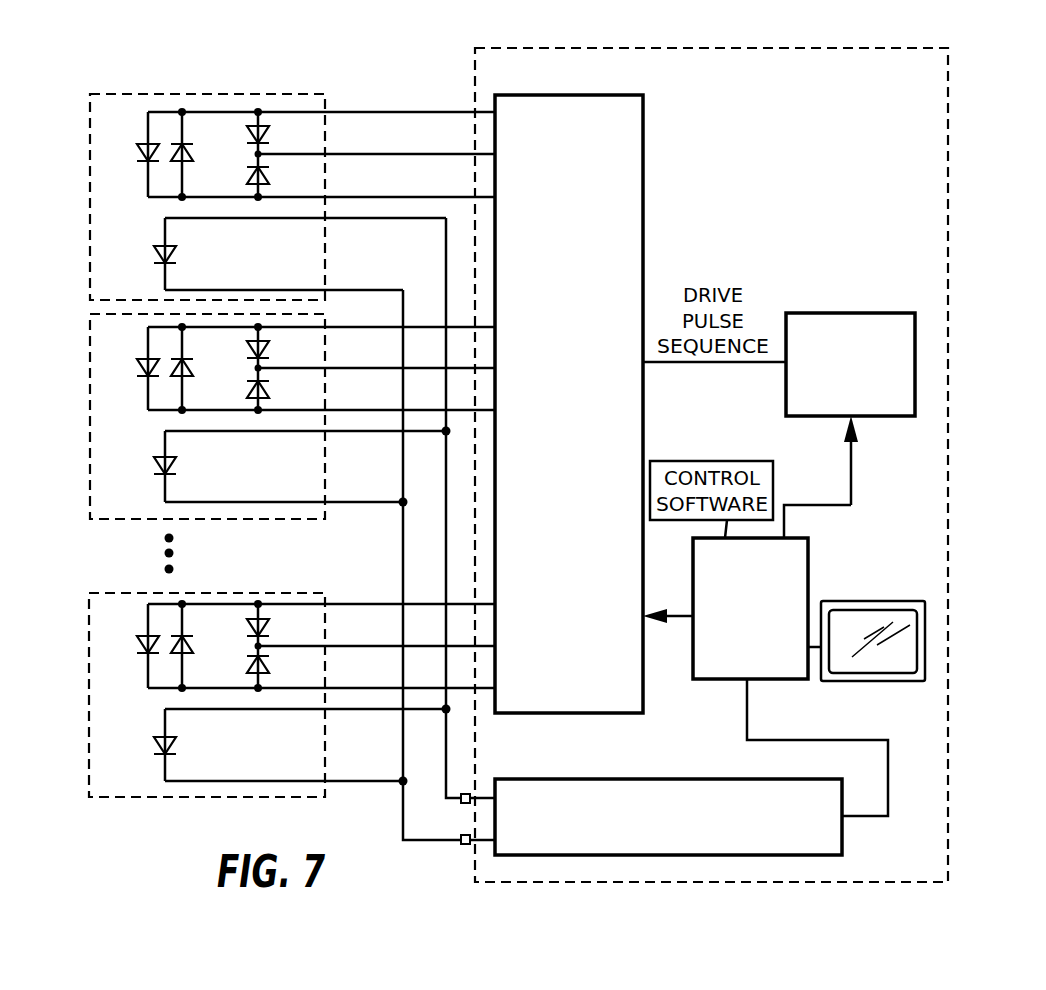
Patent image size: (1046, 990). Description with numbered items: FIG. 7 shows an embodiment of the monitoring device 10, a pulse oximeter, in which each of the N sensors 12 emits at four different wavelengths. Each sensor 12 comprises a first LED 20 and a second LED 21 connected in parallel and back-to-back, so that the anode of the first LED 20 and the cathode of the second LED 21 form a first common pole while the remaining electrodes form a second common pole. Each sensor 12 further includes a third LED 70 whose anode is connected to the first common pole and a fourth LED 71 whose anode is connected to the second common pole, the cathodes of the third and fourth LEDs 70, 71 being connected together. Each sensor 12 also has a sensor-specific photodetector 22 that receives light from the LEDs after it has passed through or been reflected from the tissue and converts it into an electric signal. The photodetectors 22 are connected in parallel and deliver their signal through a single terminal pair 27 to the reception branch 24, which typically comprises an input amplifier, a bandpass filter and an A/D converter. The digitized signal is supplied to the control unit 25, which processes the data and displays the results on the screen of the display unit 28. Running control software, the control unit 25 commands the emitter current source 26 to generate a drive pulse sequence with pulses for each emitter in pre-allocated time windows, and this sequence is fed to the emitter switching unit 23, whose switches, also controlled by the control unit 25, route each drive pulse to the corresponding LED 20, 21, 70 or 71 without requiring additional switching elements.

The monitoring device 10 is at (711, 445).
The sensor 12 is at (185, 445).
The first LED 20 is at (128, 407).
The second LED 21 is at (208, 397).
The photodetector 22 is at (146, 507).
The emitter switching unit 23 is at (569, 384).
The reception branch 24 is at (668, 799).
The control unit 25 is at (774, 608).
The emitter current source 26 is at (856, 347).
The single terminal pair 27 is at (471, 829).
The display unit 28 is at (873, 624).
The third LED 70 is at (285, 378).
The fourth LED 71 is at (285, 423).